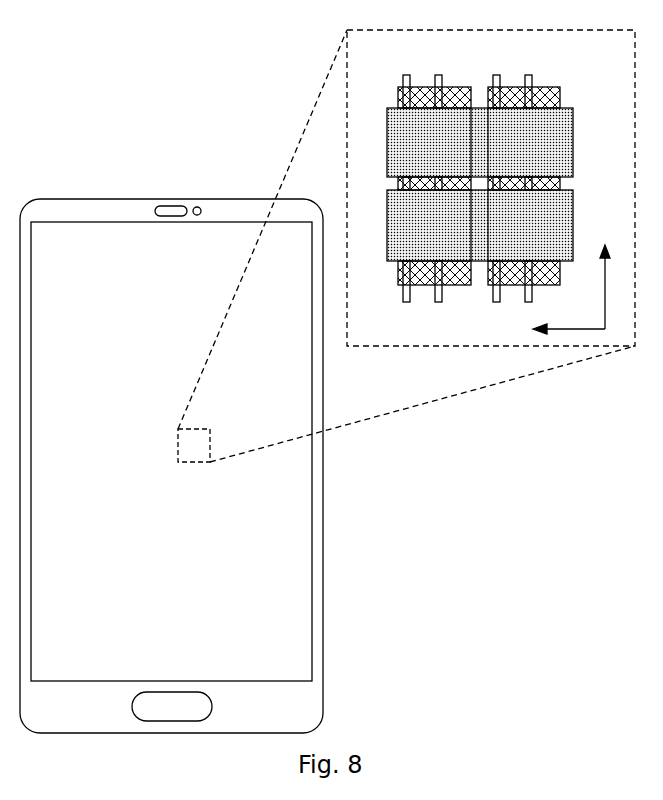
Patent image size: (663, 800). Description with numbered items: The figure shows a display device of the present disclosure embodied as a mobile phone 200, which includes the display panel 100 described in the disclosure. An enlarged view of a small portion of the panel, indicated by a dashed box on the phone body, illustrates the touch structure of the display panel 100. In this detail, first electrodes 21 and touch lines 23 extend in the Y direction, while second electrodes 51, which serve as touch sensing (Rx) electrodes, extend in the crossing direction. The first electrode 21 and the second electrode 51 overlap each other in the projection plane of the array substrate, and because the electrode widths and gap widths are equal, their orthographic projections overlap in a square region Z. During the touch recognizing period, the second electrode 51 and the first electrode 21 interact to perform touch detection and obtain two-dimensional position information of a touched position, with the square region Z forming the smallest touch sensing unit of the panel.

The mobile phone 200 is at (74, 183).
The display panel 100 is at (491, 188).
The first electrode 21 is at (428, 94).
The touch lines 23 is at (530, 78).
The second electrode 51 is at (400, 153).
The square overlapped region Z is at (433, 140).